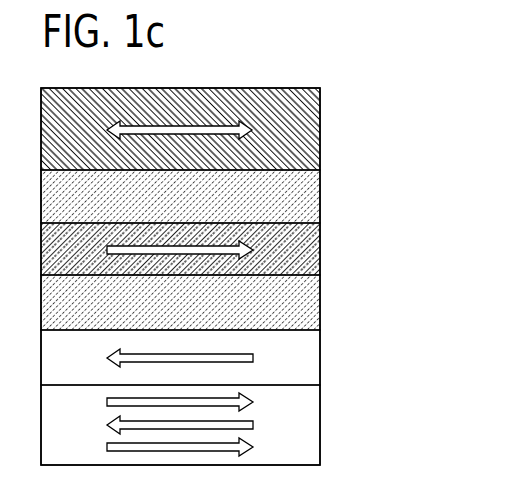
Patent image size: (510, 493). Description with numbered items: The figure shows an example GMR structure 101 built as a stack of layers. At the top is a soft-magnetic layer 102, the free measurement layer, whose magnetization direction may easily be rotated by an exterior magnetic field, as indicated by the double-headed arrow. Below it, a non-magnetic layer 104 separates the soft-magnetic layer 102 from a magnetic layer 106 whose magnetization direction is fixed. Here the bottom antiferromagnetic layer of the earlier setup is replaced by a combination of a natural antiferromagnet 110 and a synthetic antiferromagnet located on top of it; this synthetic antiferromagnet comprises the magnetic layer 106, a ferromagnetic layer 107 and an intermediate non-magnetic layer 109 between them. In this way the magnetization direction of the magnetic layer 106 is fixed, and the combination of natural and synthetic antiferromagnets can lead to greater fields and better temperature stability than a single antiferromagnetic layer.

The GMR structure 101 is at (390, 63).
The soft-magnetic layer 102 is at (320, 118).
The non-magnetic layer 104 is at (320, 183).
The magnetic layer 106 is at (320, 238).
The intermediate non-magnetic layer 109 is at (320, 305).
The ferromagnetic layer 107 is at (320, 355).
The natural antiferromagnet 110 is at (320, 425).